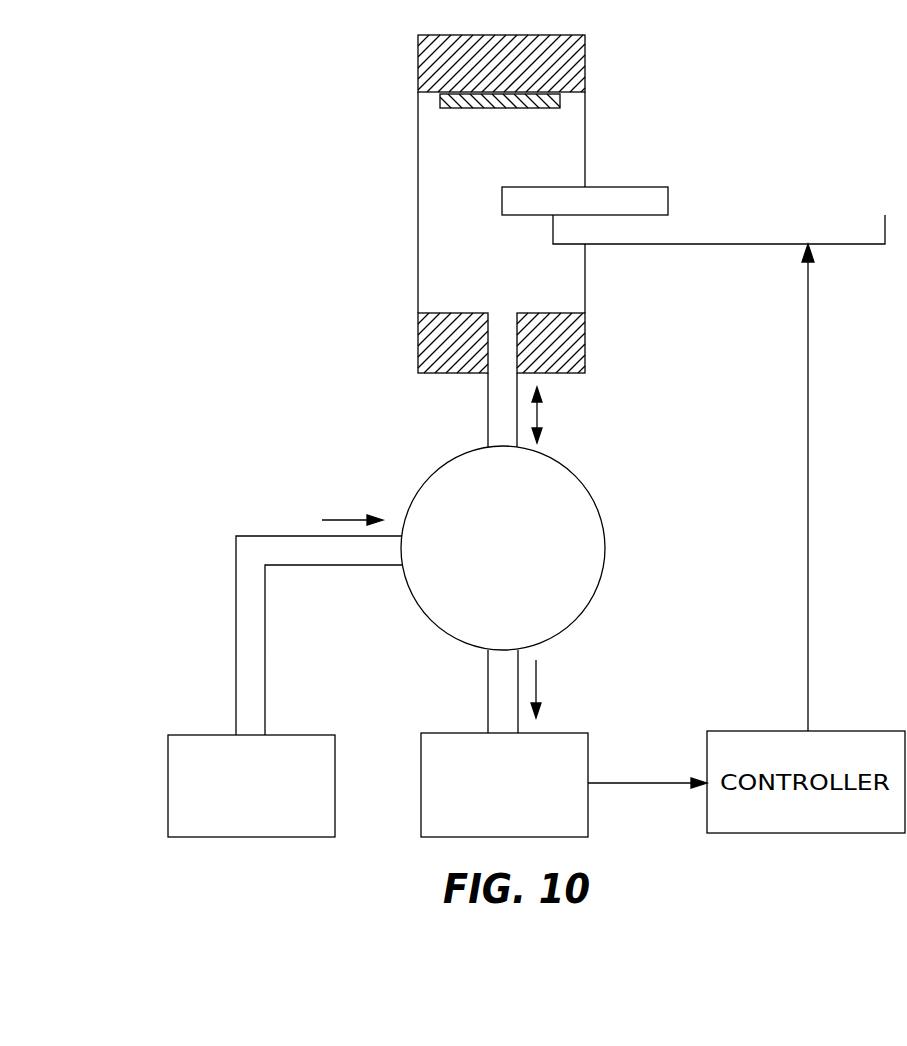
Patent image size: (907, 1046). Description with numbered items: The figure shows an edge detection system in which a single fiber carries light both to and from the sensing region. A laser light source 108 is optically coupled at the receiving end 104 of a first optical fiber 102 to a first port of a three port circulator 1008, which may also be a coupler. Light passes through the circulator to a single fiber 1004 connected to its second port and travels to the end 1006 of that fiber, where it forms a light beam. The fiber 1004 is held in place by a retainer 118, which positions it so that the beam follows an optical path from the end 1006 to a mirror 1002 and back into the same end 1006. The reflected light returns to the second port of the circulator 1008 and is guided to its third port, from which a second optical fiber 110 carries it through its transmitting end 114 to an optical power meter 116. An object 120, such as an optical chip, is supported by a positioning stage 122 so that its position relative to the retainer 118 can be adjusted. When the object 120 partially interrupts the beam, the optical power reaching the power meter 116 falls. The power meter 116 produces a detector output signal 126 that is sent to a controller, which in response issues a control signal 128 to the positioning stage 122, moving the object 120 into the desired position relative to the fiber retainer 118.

The first optical fiber 102 is at (350, 565).
The receiving end 104 is at (253, 735).
The laser light source 108 is at (168, 800).
The second optical fiber 110 is at (488, 684).
The transmitting end 114 is at (505, 733).
The optical power meter 116 is at (421, 787).
The retainer 118 is at (418, 123).
The object 120 is at (645, 187).
The positioning stage 122 is at (750, 214).
The detector output signal 126 is at (615, 783).
The control signal 128 is at (810, 372).
The mirror 1002 is at (537, 109).
The single fiber 1004 is at (488, 405).
The fiber end 1006 is at (503, 313).
The three port circulator 1008 is at (437, 470).